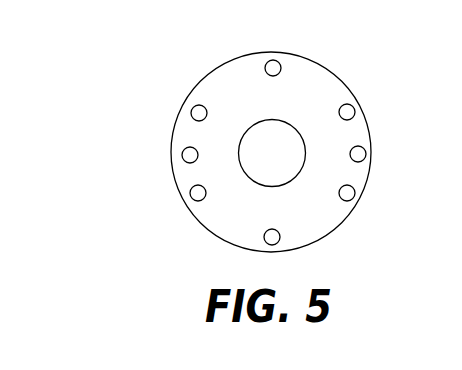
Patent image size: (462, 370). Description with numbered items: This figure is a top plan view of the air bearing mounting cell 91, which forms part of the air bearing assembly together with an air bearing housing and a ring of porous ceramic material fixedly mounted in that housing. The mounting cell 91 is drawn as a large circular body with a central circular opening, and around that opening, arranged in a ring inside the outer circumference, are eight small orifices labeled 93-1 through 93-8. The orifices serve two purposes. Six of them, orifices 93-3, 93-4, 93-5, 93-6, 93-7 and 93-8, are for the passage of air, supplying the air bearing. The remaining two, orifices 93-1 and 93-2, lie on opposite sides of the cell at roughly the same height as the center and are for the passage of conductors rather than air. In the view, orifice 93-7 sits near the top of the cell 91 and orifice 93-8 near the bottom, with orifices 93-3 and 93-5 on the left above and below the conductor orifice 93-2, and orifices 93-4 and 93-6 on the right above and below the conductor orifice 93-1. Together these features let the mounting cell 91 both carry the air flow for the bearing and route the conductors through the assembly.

The mounting cell 91 is at (336, 226).
The orifice 93-1 is at (366, 153).
The orifice 93-2 is at (182, 155).
The orifice 93-3 is at (194, 107).
The orifice 93-4 is at (353, 107).
The orifice 93-5 is at (190, 193).
The orifice 93-6 is at (355, 193).
The orifice 93-7 is at (278, 61).
The orifice 93-8 is at (264, 237).